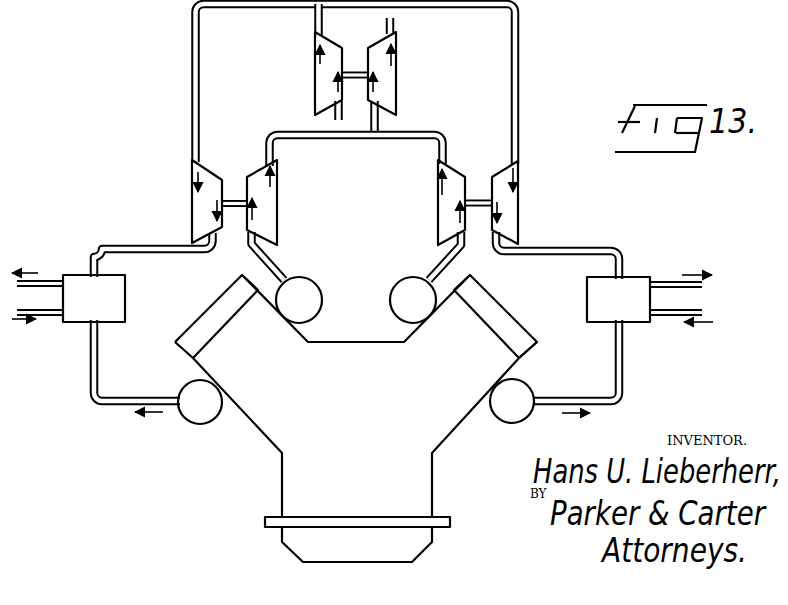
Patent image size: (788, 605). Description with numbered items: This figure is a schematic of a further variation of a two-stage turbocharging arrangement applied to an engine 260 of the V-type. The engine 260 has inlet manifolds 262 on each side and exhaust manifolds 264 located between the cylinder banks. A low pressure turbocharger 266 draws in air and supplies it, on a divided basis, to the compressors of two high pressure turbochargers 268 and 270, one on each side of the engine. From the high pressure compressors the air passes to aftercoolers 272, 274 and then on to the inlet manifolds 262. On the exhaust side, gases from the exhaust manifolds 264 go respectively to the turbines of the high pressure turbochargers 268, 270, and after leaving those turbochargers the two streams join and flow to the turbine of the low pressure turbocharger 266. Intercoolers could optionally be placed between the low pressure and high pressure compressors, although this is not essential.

The engine 260 is at (297, 473).
The inlet manifolds 262 is at (202, 412).
The exhaust manifolds 264 is at (307, 290).
The low pressure turbocharger 266 is at (404, 69).
The high pressure turbocharger 268 is at (186, 203).
The high pressure turbocharger 270 is at (525, 200).
The aftercooler 272 is at (84, 325).
The aftercooler 274 is at (641, 327).